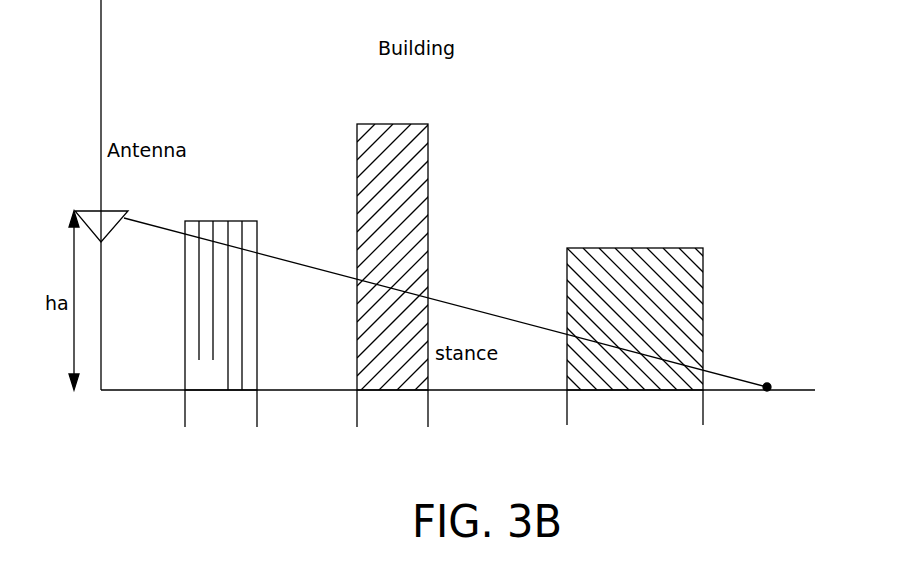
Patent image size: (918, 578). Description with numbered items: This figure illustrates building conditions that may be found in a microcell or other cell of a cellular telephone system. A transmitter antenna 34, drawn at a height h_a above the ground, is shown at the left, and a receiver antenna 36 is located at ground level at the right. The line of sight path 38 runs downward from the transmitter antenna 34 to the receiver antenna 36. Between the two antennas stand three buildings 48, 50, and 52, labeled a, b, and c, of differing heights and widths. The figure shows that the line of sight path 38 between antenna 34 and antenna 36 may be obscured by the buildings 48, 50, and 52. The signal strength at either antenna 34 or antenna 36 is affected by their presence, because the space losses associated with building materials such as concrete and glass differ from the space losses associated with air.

The transmitter antenna 34 is at (94, 209).
The receiver antenna 36 is at (752, 378).
The line of sight path 38 is at (452, 302).
The building 48 is at (238, 221).
The building 50 is at (410, 124).
The building 52 is at (670, 248).